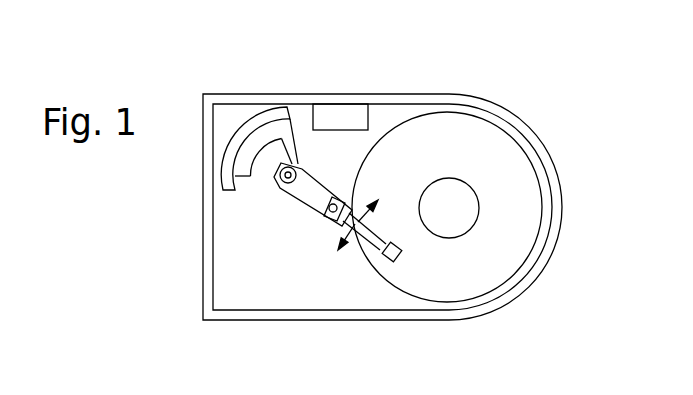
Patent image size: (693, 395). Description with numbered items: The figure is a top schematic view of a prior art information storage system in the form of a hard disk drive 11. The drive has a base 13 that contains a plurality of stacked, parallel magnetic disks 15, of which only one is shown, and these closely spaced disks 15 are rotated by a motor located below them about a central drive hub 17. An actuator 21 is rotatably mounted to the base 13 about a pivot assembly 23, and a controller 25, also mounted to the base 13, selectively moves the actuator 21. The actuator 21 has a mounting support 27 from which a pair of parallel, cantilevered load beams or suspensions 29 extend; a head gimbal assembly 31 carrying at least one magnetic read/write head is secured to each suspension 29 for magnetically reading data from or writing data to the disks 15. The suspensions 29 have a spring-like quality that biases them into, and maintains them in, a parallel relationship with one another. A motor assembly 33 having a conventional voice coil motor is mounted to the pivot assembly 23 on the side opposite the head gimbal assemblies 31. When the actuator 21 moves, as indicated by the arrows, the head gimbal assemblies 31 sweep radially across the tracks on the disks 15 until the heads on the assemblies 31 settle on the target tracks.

The hard disk drive 11 is at (586, 77).
The base 13 is at (428, 93).
The magnetic disks 15 is at (525, 187).
The central drive hub 17 is at (442, 178).
The actuator 21 is at (298, 241).
The pivot assembly 23 is at (276, 183).
The controller 25 is at (334, 113).
The mounting support 27 is at (297, 196).
The suspensions 29 is at (371, 246).
The head gimbal assembly 31 is at (400, 256).
The motor assembly 33 is at (256, 118).